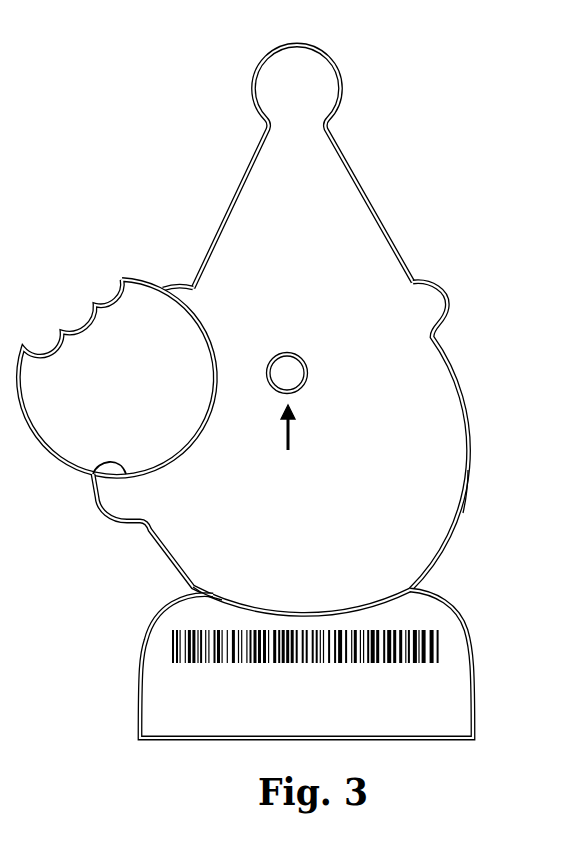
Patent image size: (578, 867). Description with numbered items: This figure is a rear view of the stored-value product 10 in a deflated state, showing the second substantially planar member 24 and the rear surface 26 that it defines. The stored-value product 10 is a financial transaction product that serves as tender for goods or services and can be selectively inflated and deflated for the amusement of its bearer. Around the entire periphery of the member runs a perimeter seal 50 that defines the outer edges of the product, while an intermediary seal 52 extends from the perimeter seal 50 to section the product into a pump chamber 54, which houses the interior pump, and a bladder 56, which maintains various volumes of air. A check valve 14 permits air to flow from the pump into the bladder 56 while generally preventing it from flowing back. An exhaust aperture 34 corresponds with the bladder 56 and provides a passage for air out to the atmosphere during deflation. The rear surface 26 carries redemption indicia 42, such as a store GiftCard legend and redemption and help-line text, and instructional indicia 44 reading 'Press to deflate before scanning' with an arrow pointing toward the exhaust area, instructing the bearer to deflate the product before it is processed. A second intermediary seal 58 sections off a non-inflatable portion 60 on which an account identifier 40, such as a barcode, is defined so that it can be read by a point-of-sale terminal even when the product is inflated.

The stored-value product 10 is at (408, 102).
The check valve 14 is at (288, 368).
The second substantially planar member 24 is at (430, 417).
The second or rear surface 26 is at (450, 488).
The exhaust aperture 34 is at (302, 371).
The account identifier 40 is at (441, 648).
The redemption indicia 42 is at (244, 234).
The instructional indicia 44 is at (233, 494).
The perimeter seal 50 is at (344, 162).
The intermediary seal 52 is at (93, 463).
The pump chamber 54 is at (125, 334).
The bladder 56 is at (420, 533).
The second intermediary seal 58 is at (213, 595).
The non-inflatable portion 60 is at (437, 708).